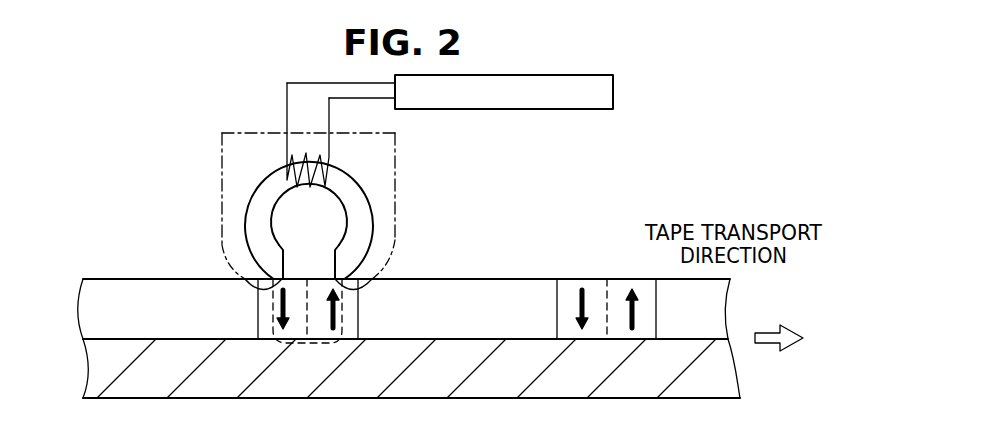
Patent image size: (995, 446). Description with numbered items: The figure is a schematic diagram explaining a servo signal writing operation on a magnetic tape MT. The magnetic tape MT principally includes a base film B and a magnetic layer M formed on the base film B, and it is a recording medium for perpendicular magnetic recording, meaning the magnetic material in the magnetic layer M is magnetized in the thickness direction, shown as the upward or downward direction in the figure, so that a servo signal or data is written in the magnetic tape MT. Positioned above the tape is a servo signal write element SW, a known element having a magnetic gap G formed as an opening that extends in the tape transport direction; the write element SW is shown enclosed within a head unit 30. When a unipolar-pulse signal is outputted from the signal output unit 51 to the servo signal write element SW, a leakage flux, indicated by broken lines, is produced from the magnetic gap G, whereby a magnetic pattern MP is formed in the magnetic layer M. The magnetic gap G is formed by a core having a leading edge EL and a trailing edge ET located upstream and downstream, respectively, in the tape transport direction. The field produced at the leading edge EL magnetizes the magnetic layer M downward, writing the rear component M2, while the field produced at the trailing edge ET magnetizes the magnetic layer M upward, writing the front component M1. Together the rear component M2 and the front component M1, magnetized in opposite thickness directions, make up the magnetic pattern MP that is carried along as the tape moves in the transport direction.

The magnetic head unit 30 is at (238, 132).
The signal output unit 51 is at (613, 92).
The servo signal write element SW is at (368, 175).
The magnetic gap G is at (320, 267).
The leading edge EL is at (230, 257).
The trailing edge ET is at (385, 256).
The magnetic tape MT is at (123, 261).
The magnetic layer M is at (97, 310).
The base film B is at (100, 370).
The front component M1 is at (345, 310).
The rear component M2 is at (276, 310).
The magnetic pattern MP is at (656, 276).